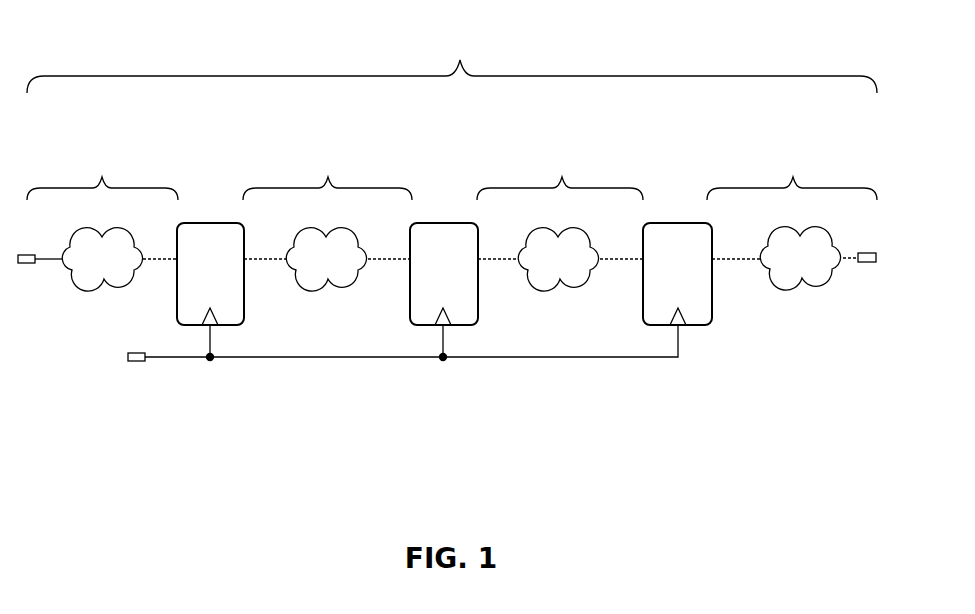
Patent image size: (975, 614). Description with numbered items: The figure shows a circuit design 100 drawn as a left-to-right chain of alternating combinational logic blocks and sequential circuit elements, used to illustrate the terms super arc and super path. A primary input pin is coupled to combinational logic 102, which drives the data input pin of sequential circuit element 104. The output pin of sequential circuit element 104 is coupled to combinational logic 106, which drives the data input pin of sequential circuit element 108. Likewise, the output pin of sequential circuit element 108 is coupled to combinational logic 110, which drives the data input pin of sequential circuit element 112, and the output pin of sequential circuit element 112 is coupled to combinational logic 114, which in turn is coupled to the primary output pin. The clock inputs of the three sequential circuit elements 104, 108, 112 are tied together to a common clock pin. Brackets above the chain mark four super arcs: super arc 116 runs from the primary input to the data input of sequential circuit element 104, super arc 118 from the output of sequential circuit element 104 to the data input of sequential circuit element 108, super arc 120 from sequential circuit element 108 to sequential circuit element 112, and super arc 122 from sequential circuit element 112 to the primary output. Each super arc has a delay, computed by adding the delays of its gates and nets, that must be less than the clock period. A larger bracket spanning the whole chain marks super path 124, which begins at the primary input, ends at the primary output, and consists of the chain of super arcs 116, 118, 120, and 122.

The circuit design 100 is at (152, 415).
The combinational logic 102 is at (102, 259).
The sequential circuit element 104 is at (210, 274).
The combinational logic 106 is at (326, 259).
The sequential circuit element 108 is at (444, 274).
The combinational logic 110 is at (558, 259).
The sequential circuit element 112 is at (677, 274).
The combinational logic 114 is at (800, 258).
The super arc 116 is at (102, 161).
The super arc 118 is at (327, 161).
The super arc 120 is at (560, 161).
The super arc 122 is at (792, 161).
The super path 124 is at (452, 50).